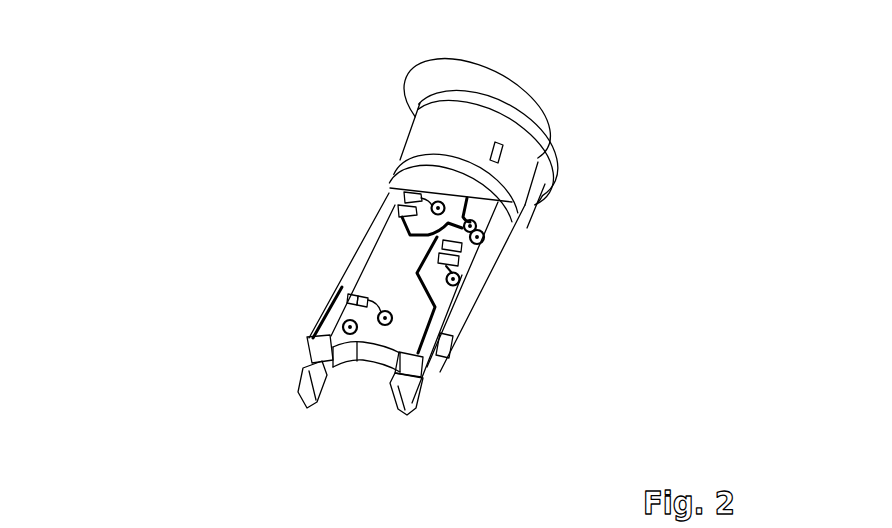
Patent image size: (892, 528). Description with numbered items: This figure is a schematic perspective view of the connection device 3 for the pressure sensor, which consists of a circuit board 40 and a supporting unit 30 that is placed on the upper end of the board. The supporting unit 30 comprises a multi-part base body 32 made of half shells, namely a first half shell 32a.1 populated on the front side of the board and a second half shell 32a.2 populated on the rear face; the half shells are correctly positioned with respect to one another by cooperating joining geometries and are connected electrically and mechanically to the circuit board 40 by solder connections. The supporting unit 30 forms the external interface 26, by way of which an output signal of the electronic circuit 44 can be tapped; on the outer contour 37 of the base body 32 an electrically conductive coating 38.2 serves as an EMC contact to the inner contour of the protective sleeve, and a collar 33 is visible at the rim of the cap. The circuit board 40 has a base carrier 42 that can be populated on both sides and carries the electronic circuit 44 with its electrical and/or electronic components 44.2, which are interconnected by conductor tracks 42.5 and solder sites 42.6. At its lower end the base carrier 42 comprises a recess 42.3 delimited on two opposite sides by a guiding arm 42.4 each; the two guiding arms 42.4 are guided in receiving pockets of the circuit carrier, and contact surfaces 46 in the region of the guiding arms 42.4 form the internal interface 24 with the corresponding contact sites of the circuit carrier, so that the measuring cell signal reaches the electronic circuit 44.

The connection device 3 is at (190, 86).
The internal interface 24 is at (533, 398).
The external interface 26 is at (610, 82).
The supporting unit 30 is at (545, 93).
The base body 32 is at (416, 130).
The first half shell 32a.1 is at (588, 240).
The second half shell 32a.2 is at (381, 132).
The collar 33 is at (552, 147).
The outer contour 37 is at (542, 200).
The electrically conductive coating 38.2 is at (526, 188).
The circuit board 40 is at (278, 180).
The base carrier 42 is at (362, 280).
The recess 42.3 is at (350, 395).
The guiding arm 42.4 is at (300, 368).
The conductor track 42.5 is at (447, 303).
The solder site 42.6 is at (463, 258).
The electronic circuit 44 is at (330, 158).
The electrical and/or electronic component 44.2 is at (397, 205).
The contact surface 46 is at (318, 348).